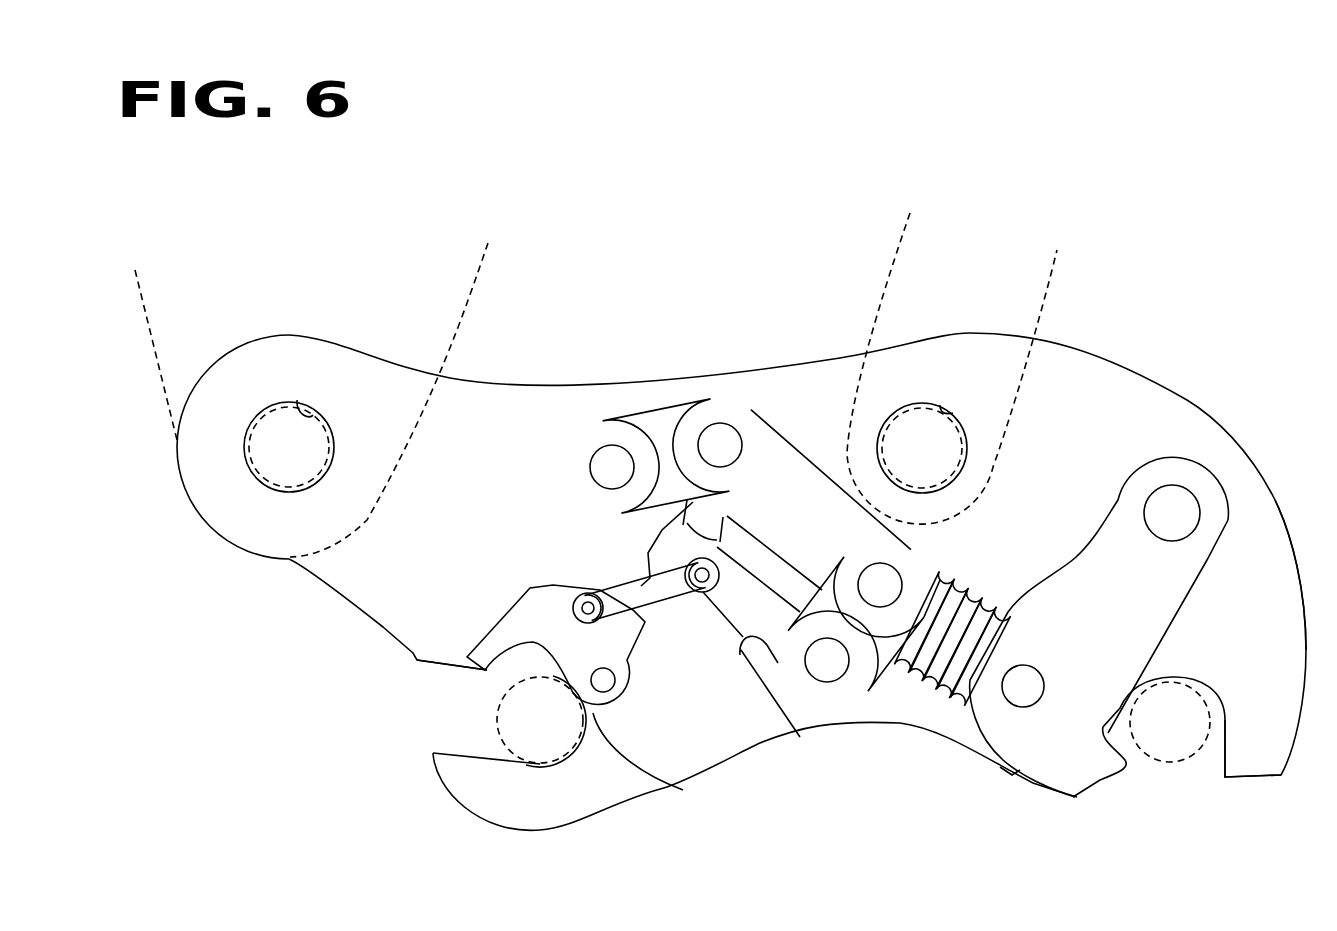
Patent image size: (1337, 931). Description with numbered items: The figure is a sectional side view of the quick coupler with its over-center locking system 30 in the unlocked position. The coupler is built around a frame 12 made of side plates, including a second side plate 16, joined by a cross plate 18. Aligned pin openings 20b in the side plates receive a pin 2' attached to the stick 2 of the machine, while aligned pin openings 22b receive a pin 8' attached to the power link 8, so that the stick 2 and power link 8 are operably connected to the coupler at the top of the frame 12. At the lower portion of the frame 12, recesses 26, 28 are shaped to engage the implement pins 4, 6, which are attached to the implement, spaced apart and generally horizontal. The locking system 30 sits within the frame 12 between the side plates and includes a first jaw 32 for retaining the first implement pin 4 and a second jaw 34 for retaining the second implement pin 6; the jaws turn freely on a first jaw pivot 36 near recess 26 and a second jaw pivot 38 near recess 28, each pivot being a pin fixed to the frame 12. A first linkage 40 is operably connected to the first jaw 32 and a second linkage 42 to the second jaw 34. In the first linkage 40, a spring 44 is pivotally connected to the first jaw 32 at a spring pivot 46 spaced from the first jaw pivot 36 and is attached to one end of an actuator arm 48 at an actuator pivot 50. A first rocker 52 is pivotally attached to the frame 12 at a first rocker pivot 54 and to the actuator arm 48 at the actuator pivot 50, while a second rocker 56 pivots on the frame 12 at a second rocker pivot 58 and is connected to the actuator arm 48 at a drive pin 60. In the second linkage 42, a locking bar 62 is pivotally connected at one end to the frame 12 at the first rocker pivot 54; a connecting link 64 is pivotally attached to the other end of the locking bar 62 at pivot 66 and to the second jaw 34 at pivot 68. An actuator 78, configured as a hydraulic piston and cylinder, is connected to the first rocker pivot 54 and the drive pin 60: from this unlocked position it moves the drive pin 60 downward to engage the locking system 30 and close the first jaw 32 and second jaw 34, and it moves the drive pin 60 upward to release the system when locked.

The stick 2 is at (311, 400).
The pin 2' is at (289, 447).
The implement pin 4 is at (1163, 733).
The implement pin 6 is at (533, 731).
The power link 8 is at (952, 368).
The pin 8' is at (922, 448).
The frame 12 is at (746, 591).
The second side plate 16 is at (1099, 621).
The cross plate 18 is at (1264, 484).
The pin opening 20b is at (297, 400).
The pin opening 22b is at (953, 413).
The recess 26 is at (1220, 770).
The recess 28 is at (470, 755).
The over-center locking system 30 is at (629, 575).
The first jaw 32 is at (1010, 762).
The second jaw 34 is at (485, 650).
The first jaw pivot 36 is at (1160, 524).
The second jaw pivot 38 is at (683, 790).
The first linkage 40 is at (686, 416).
The second linkage 42 is at (672, 657).
The spring 44 is at (975, 595).
The spring pivot 46 is at (1011, 697).
The actuator arm 48 is at (822, 467).
The actuator pivot 50 is at (868, 596).
The first rocker 52 is at (864, 688).
The first rocker pivot 54 is at (815, 671).
The second rocker 56 is at (693, 530).
The second rocker pivot 58 is at (600, 478).
The drive pin 60 is at (708, 456).
The locking bar 62 is at (800, 737).
The connecting link 64 is at (633, 580).
The pivot 66 is at (693, 592).
The pivot 68 is at (573, 597).
The actuator 78 is at (652, 413).